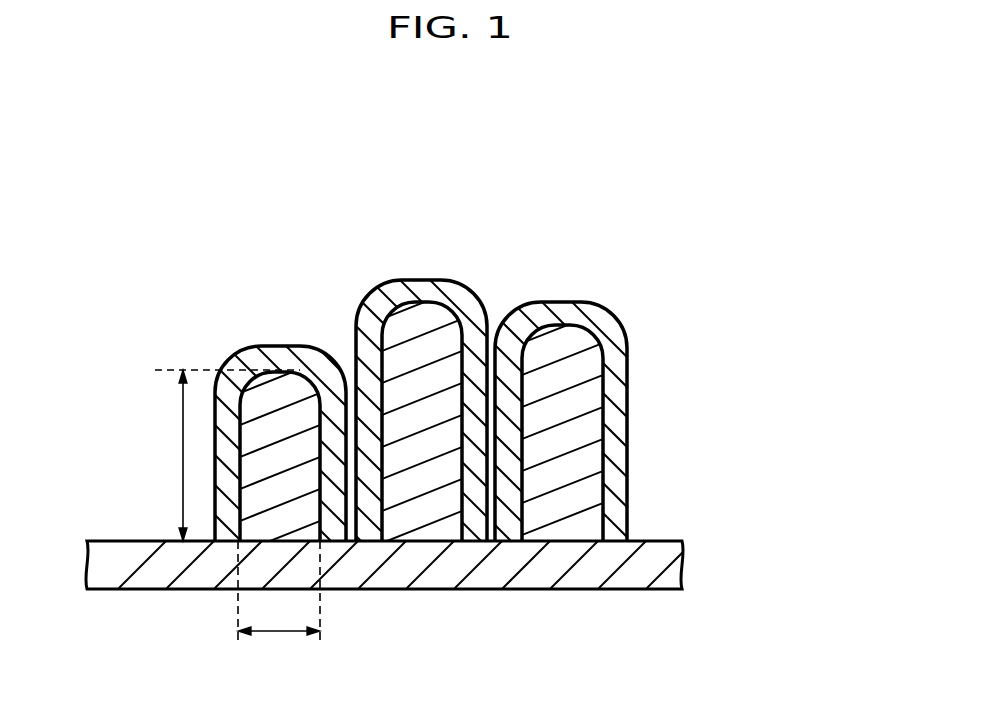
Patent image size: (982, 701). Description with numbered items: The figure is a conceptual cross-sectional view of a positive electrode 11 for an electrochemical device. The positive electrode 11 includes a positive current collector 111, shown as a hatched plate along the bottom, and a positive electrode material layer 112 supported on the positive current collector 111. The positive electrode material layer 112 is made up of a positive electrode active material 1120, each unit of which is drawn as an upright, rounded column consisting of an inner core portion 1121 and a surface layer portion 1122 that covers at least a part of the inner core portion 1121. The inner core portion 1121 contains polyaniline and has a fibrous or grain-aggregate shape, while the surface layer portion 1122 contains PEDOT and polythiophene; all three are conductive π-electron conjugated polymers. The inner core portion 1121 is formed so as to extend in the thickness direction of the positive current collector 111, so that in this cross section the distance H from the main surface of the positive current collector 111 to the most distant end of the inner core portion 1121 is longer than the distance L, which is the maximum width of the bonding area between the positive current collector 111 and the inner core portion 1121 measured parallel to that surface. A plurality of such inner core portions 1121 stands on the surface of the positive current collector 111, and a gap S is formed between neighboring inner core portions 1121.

The positive electrode 11 is at (535, 182).
The positive current collector 111 is at (638, 567).
The positive electrode material layer 112 is at (119, 270).
The positive electrode active material 1120 is at (742, 318).
The inner core portion 1121 is at (565, 405).
The surface layer portion 1122 is at (612, 333).
The gap S is at (347, 367).
The distance H is at (227, 455).
The distance L is at (279, 604).